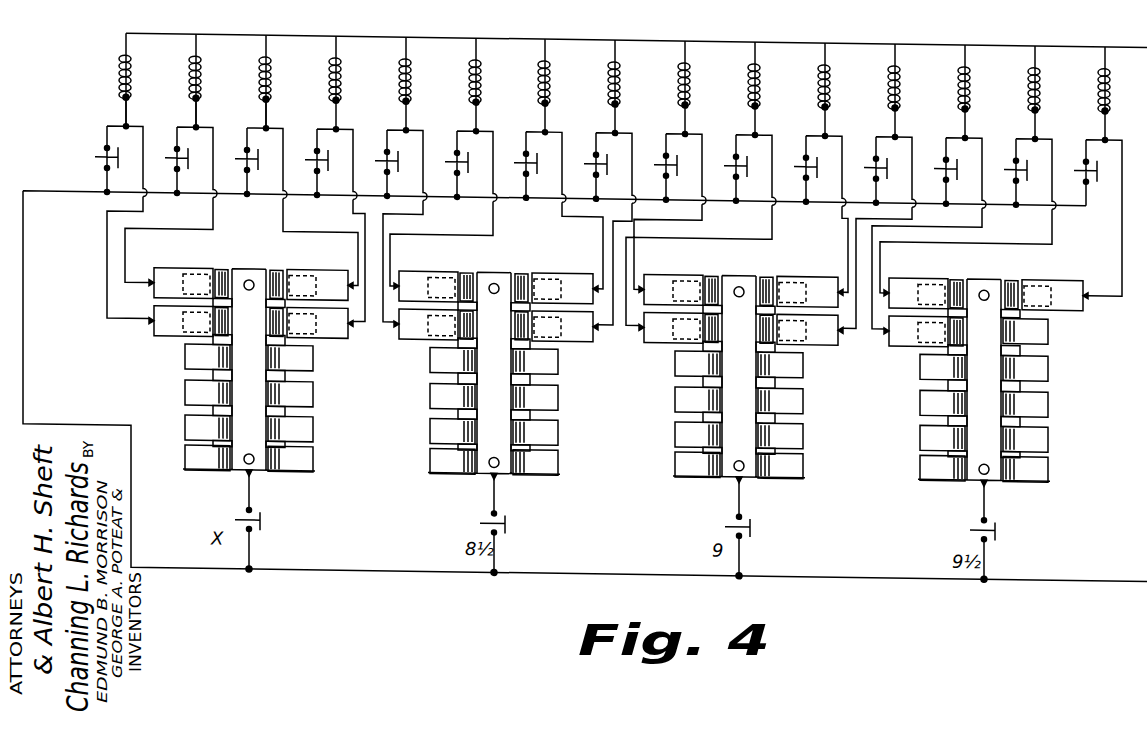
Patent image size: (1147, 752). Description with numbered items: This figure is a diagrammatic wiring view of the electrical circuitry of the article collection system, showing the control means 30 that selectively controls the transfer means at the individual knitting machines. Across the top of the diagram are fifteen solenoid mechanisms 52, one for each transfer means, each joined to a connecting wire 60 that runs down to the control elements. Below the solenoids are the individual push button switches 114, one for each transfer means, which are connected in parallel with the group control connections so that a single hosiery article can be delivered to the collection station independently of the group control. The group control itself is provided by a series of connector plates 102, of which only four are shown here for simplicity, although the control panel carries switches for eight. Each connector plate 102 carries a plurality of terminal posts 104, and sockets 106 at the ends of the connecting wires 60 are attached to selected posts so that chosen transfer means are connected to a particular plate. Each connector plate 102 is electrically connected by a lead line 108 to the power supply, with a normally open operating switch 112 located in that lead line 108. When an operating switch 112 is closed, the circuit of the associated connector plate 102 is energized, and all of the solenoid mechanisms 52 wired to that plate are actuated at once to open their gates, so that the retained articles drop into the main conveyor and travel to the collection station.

The control means 30 is at (392, 586).
The solenoid mechanism 52 is at (121, 94).
The connecting wire 60 is at (130, 112).
The connector plate 102 is at (263, 473).
The terminal post 104 is at (271, 320).
The socket 106 is at (176, 269).
The lead line 108 is at (252, 551).
The operating switch 112 is at (245, 508).
The push button switch 114 is at (104, 149).